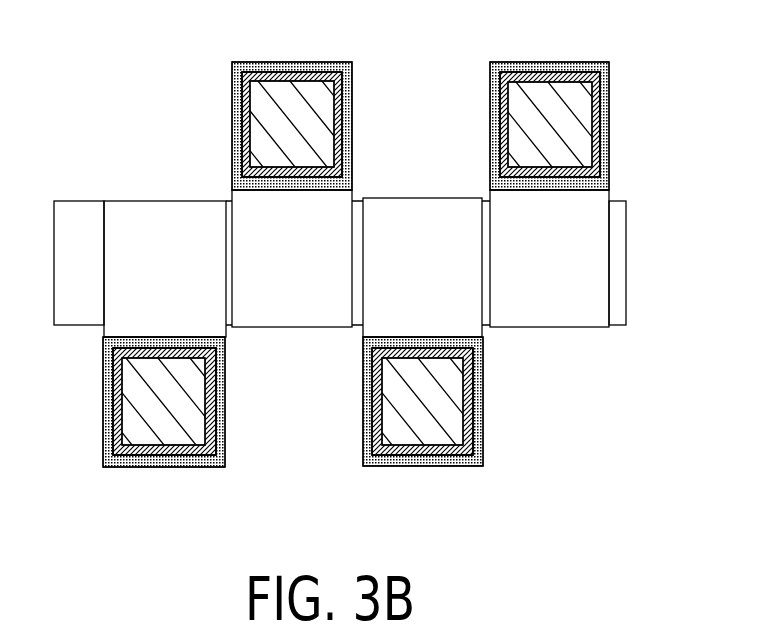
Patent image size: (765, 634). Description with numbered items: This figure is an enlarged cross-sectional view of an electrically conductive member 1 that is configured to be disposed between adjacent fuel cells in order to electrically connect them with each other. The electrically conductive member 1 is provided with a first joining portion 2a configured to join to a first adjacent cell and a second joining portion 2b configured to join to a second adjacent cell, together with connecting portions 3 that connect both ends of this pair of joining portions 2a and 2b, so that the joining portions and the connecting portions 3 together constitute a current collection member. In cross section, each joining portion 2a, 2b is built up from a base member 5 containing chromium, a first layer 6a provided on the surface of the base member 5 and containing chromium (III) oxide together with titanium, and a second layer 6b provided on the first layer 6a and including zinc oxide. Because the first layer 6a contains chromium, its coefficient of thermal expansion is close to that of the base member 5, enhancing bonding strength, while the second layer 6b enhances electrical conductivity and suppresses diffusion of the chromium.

The electrically conductive member 1 is at (118, 177).
The first joining portion 2a is at (308, 97).
The second joining portion 2b is at (383, 466).
The connecting portion 3 is at (618, 210).
The base member 5 is at (288, 122).
The first layer 6a is at (317, 77).
The second layer 6b is at (351, 90).